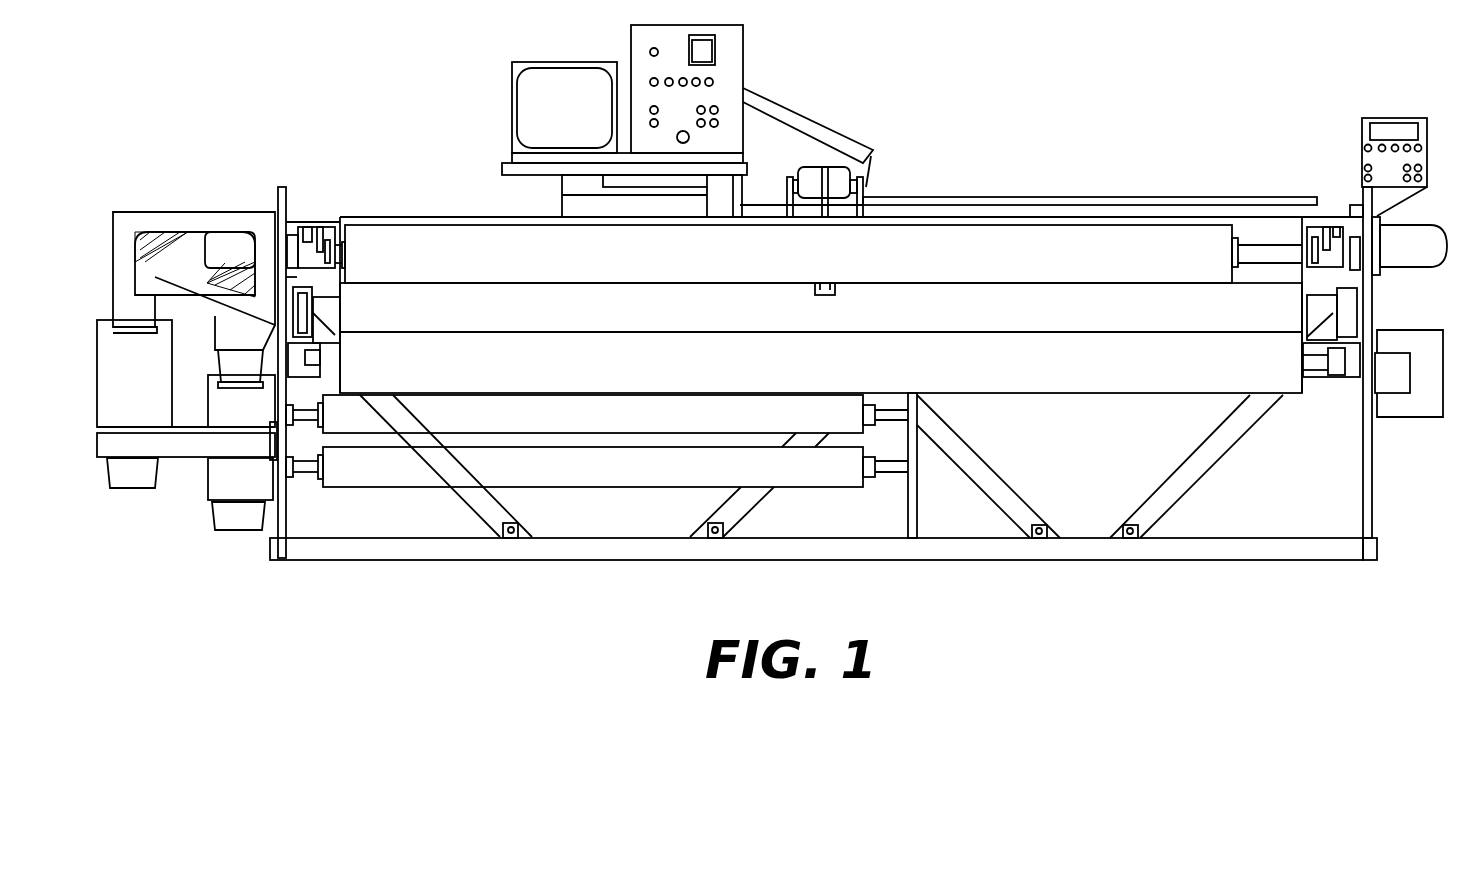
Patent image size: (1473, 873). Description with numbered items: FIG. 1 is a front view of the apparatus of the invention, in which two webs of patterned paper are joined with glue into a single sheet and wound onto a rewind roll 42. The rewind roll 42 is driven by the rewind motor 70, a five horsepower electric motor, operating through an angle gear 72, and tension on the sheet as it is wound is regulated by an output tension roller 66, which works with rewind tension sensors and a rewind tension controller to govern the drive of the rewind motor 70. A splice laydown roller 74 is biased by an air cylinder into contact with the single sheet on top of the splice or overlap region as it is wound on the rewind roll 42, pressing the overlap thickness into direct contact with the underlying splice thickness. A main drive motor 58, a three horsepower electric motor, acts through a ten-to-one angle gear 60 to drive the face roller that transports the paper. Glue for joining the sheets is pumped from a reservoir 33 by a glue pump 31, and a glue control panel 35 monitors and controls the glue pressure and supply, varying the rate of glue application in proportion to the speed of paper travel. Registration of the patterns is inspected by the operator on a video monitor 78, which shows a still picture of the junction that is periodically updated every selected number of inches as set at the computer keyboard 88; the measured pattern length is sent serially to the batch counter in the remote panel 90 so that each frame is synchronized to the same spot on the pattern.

The angle gear 72 is at (130, 310).
The rewind motor 70 is at (152, 392).
The angle gear 60 is at (247, 368).
The main drive motor 58 is at (258, 421).
The video monitor 78 is at (521, 68).
The remote panel 90 is at (728, 45).
The computer keyboard 88 is at (502, 167).
The splice laydown roller 74 is at (833, 178).
The rewind roll 42 is at (1103, 240).
The output tension roller 66 is at (1152, 362).
The glue control panel 35 is at (1373, 118).
The glue pump 31 is at (1388, 370).
The reservoir 33 is at (1410, 400).